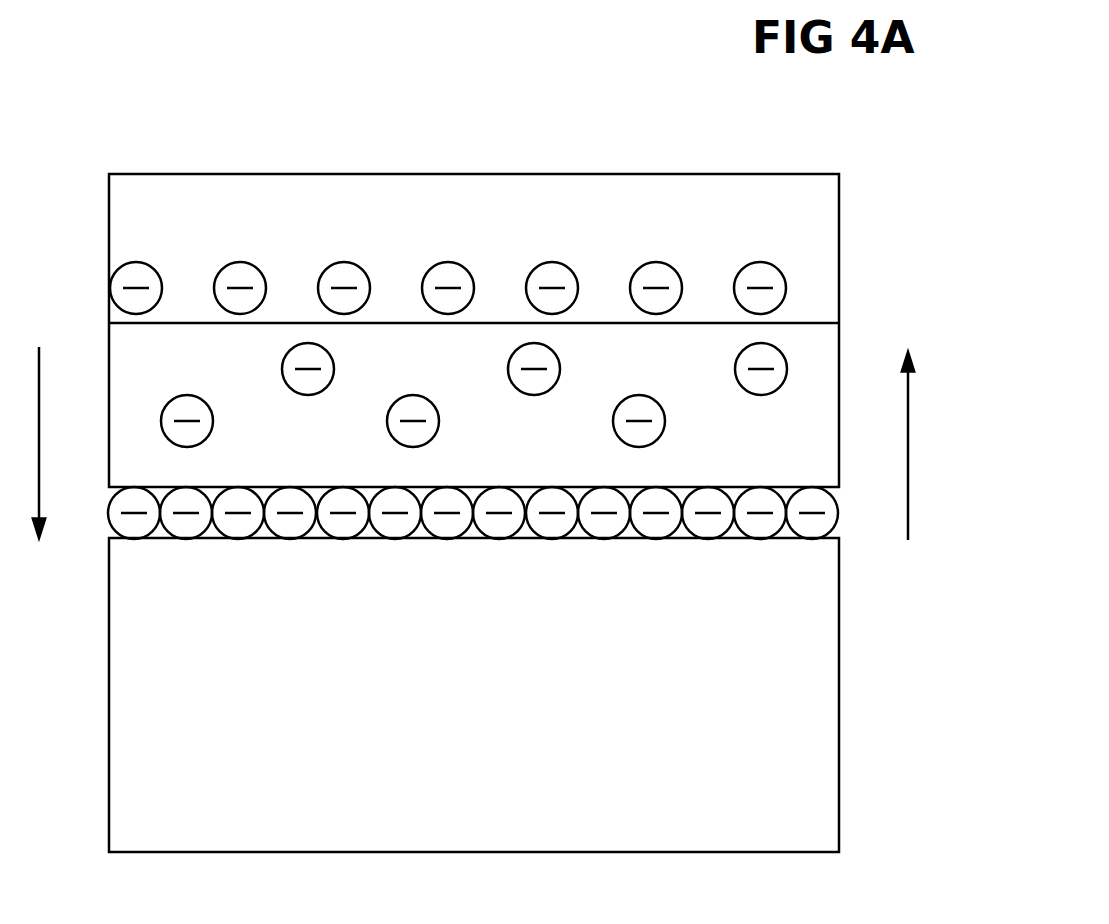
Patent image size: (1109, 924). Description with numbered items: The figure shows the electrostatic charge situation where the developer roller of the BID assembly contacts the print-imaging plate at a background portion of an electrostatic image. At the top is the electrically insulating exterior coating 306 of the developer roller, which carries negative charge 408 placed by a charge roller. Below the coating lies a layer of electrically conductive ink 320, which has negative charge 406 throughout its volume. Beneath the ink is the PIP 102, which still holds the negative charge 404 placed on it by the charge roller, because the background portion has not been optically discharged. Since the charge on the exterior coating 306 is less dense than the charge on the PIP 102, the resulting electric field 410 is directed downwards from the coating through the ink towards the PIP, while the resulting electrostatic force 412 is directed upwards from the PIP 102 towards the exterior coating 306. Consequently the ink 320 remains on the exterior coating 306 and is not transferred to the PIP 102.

The electrically insulating exterior coating 306 is at (826, 217).
The electrically conductive ink 320 is at (835, 377).
The print-imaging plate (PIP) 102 is at (825, 634).
The negative charge 408 is at (108, 274).
The negative charge 406 is at (108, 386).
The negative charge 404 is at (108, 528).
The electric field 410 is at (68, 429).
The electrostatic force 412 is at (908, 463).